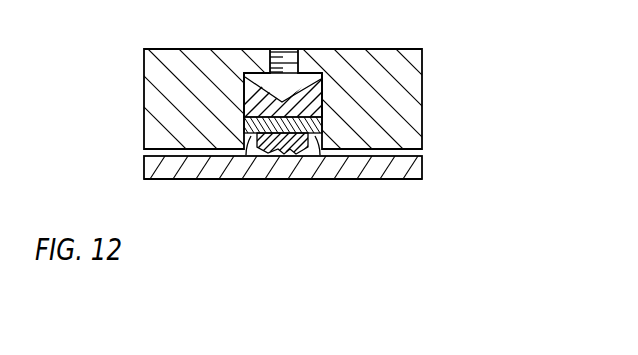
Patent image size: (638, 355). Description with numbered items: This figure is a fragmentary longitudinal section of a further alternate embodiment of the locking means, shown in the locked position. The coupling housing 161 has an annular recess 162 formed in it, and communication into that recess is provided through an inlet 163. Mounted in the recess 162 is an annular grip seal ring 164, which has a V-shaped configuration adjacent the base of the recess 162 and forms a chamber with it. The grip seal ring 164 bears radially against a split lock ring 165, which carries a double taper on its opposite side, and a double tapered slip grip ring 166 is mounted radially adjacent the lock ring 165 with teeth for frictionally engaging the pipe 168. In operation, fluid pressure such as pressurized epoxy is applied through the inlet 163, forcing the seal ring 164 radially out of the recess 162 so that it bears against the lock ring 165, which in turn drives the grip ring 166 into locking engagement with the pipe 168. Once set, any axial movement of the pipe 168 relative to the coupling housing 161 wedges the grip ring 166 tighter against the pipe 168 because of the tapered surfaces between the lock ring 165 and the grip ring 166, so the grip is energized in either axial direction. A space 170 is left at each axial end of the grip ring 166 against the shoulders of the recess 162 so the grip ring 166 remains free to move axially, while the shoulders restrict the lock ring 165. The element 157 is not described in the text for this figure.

The bolt tip 157 is at (277, 151).
The coupling housing 161 is at (387, 62).
The annular recess 162 is at (322, 72).
The inlet 163 is at (277, 48).
The annular grip seal ring 164 is at (322, 101).
The split lock ring 165 is at (322, 128).
The double tapered slip grip ring 166 is at (297, 156).
The pipe 168 is at (303, 179).
The space 170 is at (247, 153).